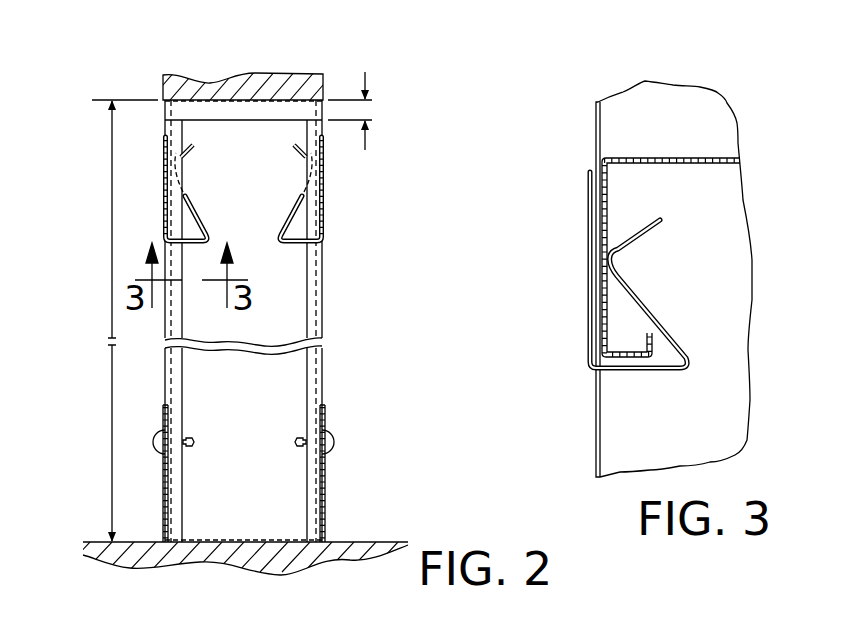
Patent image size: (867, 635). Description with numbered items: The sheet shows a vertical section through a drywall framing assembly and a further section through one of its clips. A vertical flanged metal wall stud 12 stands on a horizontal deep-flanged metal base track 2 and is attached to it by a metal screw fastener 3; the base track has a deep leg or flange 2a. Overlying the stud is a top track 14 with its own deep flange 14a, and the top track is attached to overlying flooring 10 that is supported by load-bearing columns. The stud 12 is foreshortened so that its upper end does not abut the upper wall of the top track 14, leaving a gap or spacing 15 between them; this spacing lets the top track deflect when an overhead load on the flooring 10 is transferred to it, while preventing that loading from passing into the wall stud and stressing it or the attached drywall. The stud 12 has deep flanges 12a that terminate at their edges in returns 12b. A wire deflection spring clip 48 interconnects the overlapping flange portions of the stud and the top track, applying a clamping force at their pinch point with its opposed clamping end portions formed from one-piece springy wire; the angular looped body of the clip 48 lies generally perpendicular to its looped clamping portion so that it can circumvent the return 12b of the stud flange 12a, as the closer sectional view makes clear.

In FIG. 2, the base track 2 is at (242, 538).
In FIG. 2, the base track flange 2a is at (326, 507).
In FIG. 2, the screw fastener 3 is at (331, 440).
In FIG. 2, the flooring 10 is at (214, 89).
In FIG. 2, the wall stud 12 is at (324, 303).
In FIG. 3, the wall stud 12 is at (697, 156).
In FIG. 2, the stud flange 12a is at (313, 377).
In FIG. 3, the stud flange 12a is at (607, 218).
In FIG. 3, the return 12b is at (627, 347).
In FIG. 2, the top track 14 is at (278, 97).
In FIG. 3, the top track 14 is at (594, 121).
In FIG. 3, the top track flange 14a is at (593, 143).
In FIG. 2, the gap 15 is at (368, 112).
In FIG. 2, the deflection spring clip 48 is at (197, 200).
In FIG. 3, the deflection spring clip 48 is at (679, 375).